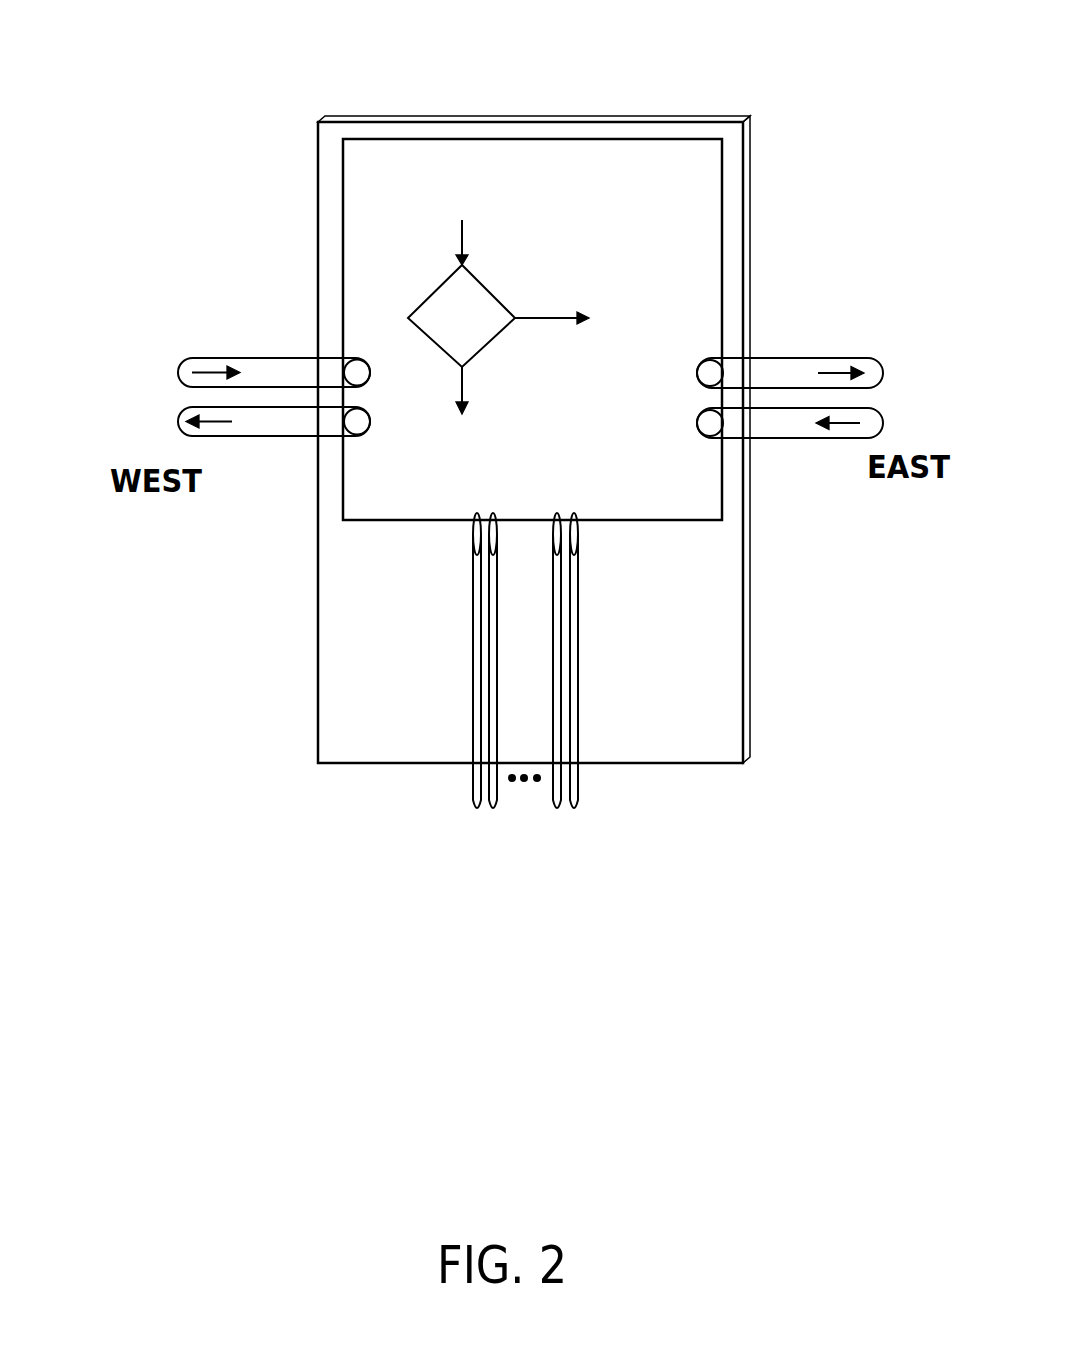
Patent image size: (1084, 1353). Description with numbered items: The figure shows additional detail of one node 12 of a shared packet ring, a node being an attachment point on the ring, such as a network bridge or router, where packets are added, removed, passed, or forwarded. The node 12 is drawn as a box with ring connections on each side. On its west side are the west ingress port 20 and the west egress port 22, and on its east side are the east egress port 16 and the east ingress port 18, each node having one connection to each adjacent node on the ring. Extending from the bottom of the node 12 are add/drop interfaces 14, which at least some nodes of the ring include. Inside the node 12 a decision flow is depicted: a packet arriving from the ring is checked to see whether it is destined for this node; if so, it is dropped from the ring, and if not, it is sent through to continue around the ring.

The node 12 is at (513, 123).
The add/drop interfaces 14 is at (578, 787).
The east egress port 16 is at (777, 370).
The east ingress port 18 is at (763, 440).
The west ingress port 20 is at (240, 367).
The west egress port 22 is at (172, 422).